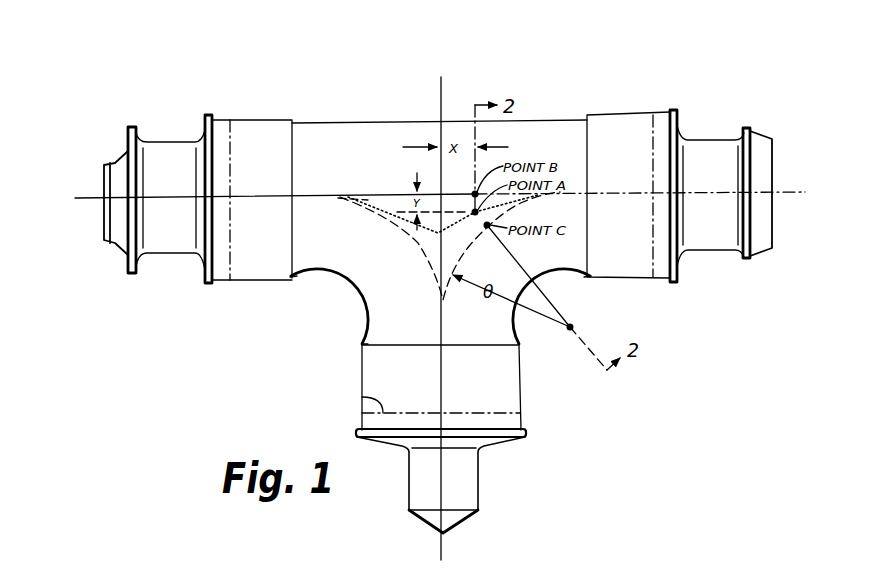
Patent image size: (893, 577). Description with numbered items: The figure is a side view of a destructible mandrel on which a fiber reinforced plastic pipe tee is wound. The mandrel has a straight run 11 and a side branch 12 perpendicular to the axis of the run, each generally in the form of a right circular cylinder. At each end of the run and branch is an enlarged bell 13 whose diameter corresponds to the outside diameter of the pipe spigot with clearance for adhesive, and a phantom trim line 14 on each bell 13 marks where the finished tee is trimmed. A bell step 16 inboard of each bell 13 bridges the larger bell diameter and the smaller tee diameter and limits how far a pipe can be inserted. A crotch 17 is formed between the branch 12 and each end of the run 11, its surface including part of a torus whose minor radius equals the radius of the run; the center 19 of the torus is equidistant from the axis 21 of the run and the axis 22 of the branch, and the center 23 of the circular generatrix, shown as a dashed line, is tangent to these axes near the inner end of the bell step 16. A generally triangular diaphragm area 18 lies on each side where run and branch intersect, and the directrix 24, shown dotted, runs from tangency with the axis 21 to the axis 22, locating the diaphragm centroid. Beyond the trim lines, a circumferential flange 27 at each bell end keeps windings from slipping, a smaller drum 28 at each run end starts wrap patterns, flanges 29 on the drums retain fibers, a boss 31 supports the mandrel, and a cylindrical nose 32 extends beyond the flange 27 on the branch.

The run 11 is at (372, 104).
The side branch 12 is at (348, 358).
The bell 13 is at (268, 282).
The phantom line 14 is at (230, 283).
The bell step 16 is at (306, 122).
The crotch 17 is at (352, 298).
The diaphragm area 18 is at (390, 200).
The center of the torus 19 is at (574, 326).
The axis of the run 21 is at (792, 196).
The axis of the branch 22 is at (445, 550).
The center of the generatrix of the torus 23 is at (397, 231).
The directrix 24 is at (362, 197).
The circumferential flange 27 is at (208, 116).
The drum 28 is at (162, 143).
The flange 29 is at (133, 273).
The boss 31 is at (104, 225).
The nose 32 is at (480, 490).